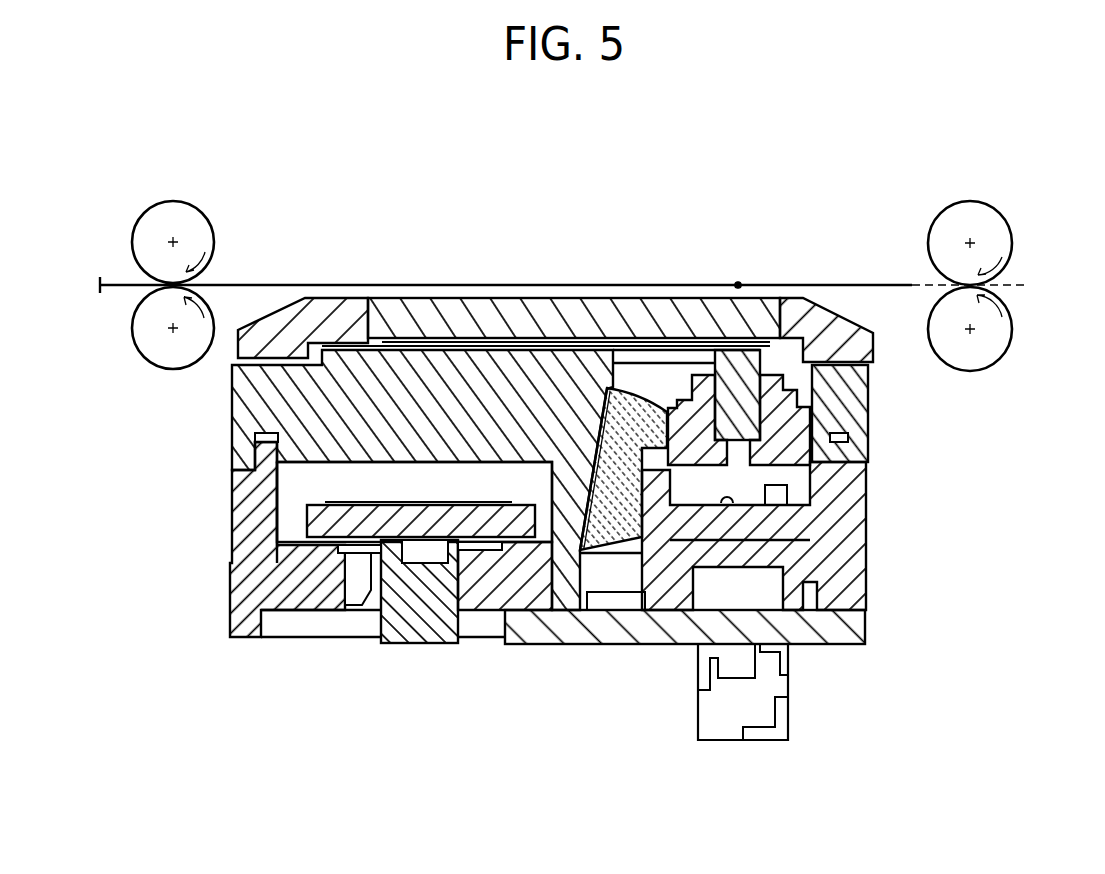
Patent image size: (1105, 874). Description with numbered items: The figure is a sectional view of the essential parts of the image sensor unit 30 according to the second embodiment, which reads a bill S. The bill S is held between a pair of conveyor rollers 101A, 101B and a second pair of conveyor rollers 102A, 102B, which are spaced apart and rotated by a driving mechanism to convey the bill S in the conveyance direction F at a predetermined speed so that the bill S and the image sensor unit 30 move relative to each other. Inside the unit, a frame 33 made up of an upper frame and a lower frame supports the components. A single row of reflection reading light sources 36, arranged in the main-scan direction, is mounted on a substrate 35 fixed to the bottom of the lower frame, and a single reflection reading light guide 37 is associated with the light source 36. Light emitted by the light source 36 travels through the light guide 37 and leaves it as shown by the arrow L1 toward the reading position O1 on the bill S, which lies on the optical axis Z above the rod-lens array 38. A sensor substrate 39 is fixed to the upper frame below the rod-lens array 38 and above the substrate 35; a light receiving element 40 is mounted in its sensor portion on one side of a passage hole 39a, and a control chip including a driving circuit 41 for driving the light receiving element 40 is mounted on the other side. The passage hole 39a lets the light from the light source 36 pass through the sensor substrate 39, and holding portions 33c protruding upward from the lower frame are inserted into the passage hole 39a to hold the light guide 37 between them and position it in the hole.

The image sensor unit 30 is at (873, 773).
The frame 33 is at (234, 400).
The holding portions 33c is at (553, 490).
The substrate 35 is at (838, 648).
The reflection reading light source 36 is at (622, 620).
The reflection reading light guide 37 is at (590, 553).
The rod-lens array 38 is at (762, 350).
The sensor substrate 39 is at (812, 528).
The passage hole 39a is at (540, 522).
The light receiving element 40 is at (727, 497).
The driving circuit 41 is at (318, 528).
The conveyor roller 101A is at (1009, 221).
The conveyor roller 101B is at (1010, 348).
The conveyor roller 102A is at (133, 232).
The conveyor roller 102B is at (133, 322).
The bill S is at (265, 283).
The optical axis Z is at (738, 500).
The reading position O1 is at (742, 284).
The arrow indicating emitted light L1 is at (675, 363).
The conveyance direction F is at (1063, 274).